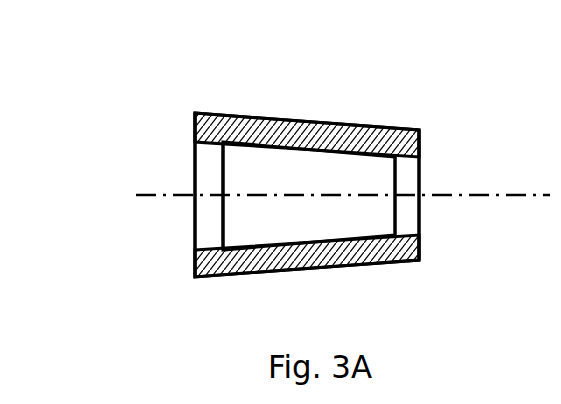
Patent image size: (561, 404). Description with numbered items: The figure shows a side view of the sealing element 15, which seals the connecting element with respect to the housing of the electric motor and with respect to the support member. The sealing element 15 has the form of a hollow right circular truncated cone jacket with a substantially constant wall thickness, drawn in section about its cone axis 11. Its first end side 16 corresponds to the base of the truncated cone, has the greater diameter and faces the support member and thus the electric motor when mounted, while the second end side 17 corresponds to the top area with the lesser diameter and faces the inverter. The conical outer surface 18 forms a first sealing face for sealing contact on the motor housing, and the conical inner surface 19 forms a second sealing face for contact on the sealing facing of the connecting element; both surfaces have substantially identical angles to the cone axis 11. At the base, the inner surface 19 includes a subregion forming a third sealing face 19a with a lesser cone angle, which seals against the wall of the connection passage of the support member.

The central axis 11 is at (487, 195).
The sealing element 15 is at (271, 92).
The first end side 16 is at (195, 258).
The second end side 17 is at (420, 243).
The outer surface 18 is at (355, 125).
The inner surface 19 is at (273, 147).
The third sealing face 19a is at (210, 249).